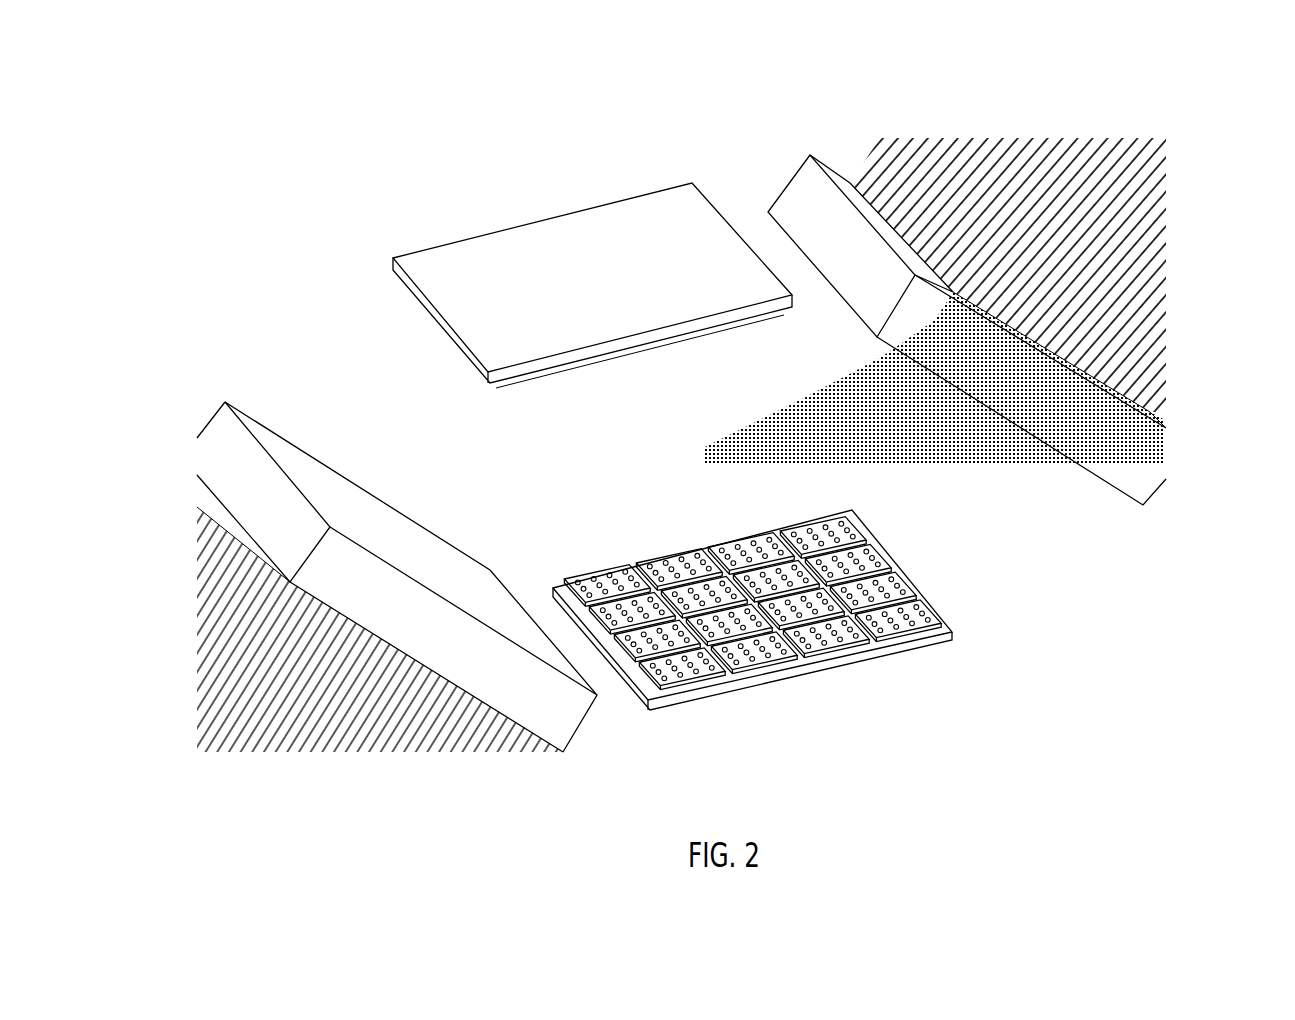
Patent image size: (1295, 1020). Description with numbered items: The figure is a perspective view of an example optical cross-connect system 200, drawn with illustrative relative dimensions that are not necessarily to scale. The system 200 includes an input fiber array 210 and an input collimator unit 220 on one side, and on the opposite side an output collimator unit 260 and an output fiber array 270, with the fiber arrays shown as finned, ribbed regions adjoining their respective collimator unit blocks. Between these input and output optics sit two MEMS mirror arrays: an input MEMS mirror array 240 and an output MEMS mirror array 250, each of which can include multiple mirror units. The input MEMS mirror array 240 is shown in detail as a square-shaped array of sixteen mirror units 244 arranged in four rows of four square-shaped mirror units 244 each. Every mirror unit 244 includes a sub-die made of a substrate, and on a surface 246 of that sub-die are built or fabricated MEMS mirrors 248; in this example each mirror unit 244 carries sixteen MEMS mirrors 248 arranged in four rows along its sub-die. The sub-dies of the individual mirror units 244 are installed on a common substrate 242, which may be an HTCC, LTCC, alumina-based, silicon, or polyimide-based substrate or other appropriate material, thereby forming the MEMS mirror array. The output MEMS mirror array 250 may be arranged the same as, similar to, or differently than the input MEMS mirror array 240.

The optical cross-connect system 200 is at (1214, 104).
The input fiber array 210 is at (895, 121).
The input collimator unit 220 is at (1194, 485).
The input MEMS mirror array 240 is at (896, 681).
The common substrate 242 is at (970, 631).
The mirror unit 244 is at (896, 635).
The surface of the sub-die 246 is at (920, 597).
The MEMS mirror 248 is at (950, 645).
The output MEMS mirror array 250 is at (477, 211).
The output collimator unit 260 is at (197, 395).
The output fiber array 270 is at (172, 544).